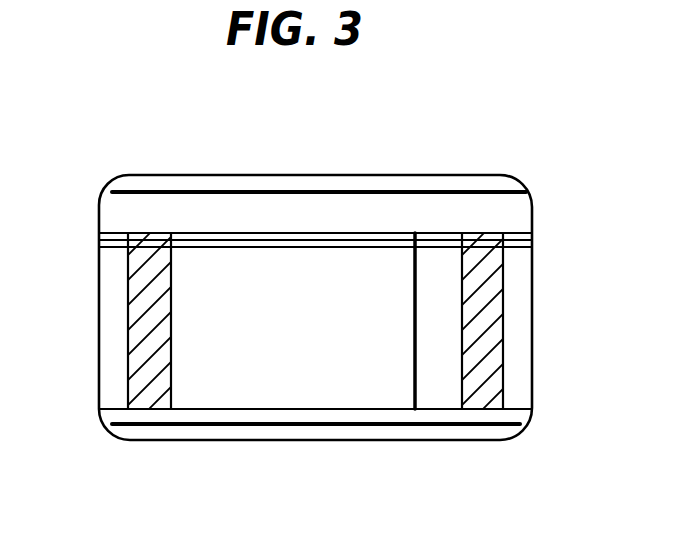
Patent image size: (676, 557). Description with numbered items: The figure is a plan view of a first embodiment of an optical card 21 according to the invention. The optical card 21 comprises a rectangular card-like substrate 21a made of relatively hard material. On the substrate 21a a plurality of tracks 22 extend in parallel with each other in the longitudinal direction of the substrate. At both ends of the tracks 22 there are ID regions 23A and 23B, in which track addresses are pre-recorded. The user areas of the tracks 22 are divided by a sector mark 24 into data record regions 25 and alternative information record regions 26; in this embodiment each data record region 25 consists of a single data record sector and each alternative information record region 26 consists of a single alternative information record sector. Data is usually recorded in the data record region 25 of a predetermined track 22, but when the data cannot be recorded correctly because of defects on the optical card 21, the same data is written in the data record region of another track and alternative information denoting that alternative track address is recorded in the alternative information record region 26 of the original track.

The optical card 21 is at (261, 446).
The card-like substrate 21a is at (217, 178).
The tracks 22 is at (526, 229).
The ID region 23A is at (137, 337).
The ID region 23B is at (492, 328).
The sector mark 24 is at (410, 268).
The data record region 25 is at (313, 368).
The alternative information record region 26 is at (440, 388).